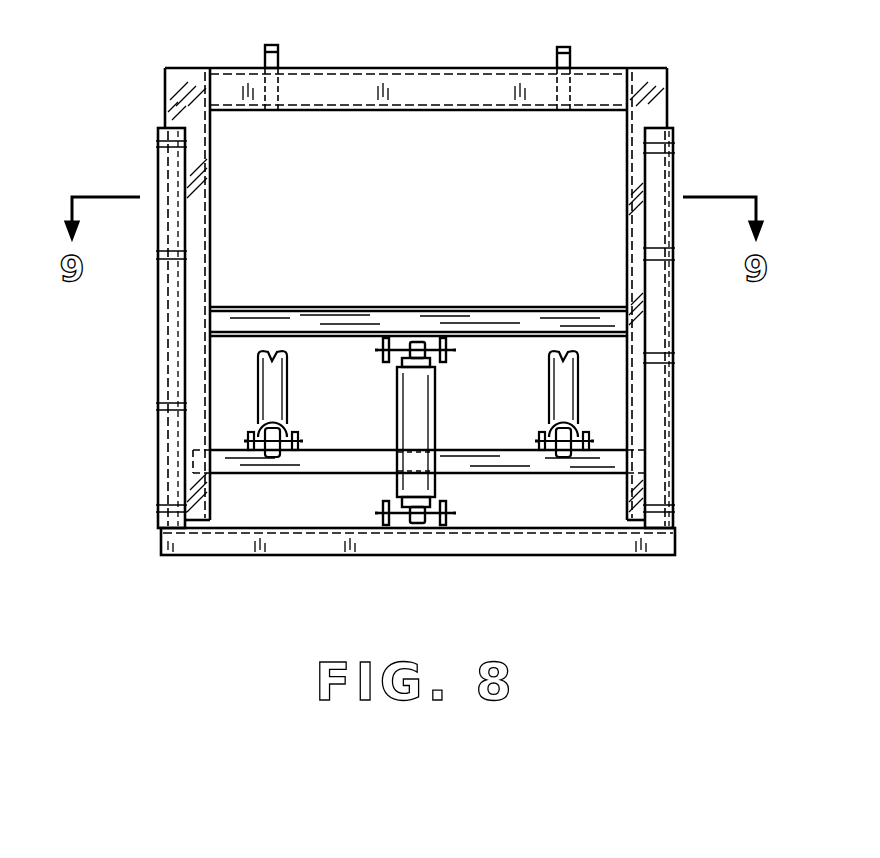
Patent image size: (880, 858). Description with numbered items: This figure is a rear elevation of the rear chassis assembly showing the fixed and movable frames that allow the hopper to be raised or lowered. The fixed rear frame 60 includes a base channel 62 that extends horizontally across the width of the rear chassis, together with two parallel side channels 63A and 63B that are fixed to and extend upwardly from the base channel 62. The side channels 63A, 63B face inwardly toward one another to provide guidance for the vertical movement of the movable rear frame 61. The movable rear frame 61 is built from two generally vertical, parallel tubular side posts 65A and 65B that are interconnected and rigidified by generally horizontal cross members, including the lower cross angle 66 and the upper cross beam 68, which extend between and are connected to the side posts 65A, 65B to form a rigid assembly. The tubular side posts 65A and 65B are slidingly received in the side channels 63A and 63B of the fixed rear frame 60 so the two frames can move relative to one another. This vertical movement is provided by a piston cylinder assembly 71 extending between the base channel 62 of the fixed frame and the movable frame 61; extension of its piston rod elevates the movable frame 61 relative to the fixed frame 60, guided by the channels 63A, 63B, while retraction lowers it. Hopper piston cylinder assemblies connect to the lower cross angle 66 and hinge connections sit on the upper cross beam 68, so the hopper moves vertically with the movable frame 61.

The fixed rear frame 60 is at (150, 371).
The movable rear frame 61 is at (158, 102).
The base channel 62 is at (486, 545).
The side channel 63A is at (162, 320).
The side channel 63B is at (668, 318).
The tubular side post 65A is at (205, 190).
The tubular side post 65B is at (637, 179).
The lower cross angle 66 is at (372, 462).
The upper cross beam 68 is at (410, 88).
The piston cylinder assembly 71 is at (405, 482).